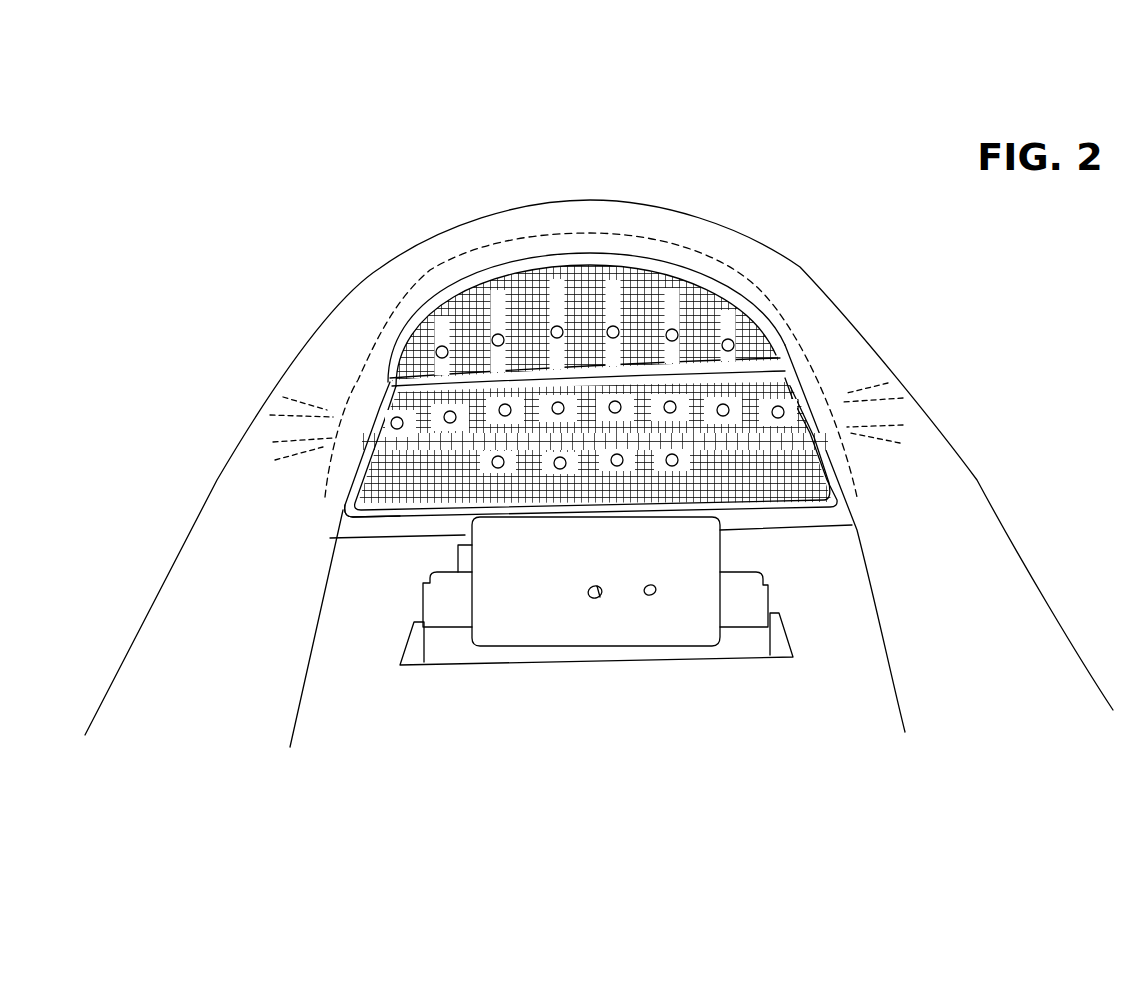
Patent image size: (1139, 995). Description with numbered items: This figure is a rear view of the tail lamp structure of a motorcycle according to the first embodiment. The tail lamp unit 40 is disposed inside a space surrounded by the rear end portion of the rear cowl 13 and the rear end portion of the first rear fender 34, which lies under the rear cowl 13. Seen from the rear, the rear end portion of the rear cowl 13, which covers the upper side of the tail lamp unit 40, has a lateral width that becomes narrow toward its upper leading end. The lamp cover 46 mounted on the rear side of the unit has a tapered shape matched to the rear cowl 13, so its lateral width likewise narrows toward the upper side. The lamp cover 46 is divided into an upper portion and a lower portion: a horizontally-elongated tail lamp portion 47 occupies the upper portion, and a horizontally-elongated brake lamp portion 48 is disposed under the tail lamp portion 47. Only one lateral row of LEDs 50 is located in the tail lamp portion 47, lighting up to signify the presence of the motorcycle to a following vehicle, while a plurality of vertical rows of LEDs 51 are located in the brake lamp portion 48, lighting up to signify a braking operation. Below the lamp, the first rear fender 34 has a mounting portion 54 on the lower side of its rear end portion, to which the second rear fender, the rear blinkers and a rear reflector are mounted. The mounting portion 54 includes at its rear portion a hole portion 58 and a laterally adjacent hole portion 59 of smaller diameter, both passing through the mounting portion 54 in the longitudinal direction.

The rear cowl 13 is at (973, 497).
The first rear fender 34 is at (852, 663).
The tail lamp unit 40 is at (802, 262).
The lamp cover 46 is at (796, 382).
The tail lamp portion 47 is at (389, 357).
The brake lamp portion 48 is at (333, 494).
The LEDs 50 is at (442, 346).
The LEDs 51 is at (502, 404).
The mounting portion 54 is at (556, 637).
The hole portion 58 is at (599, 603).
The hole portion 59 is at (653, 600).